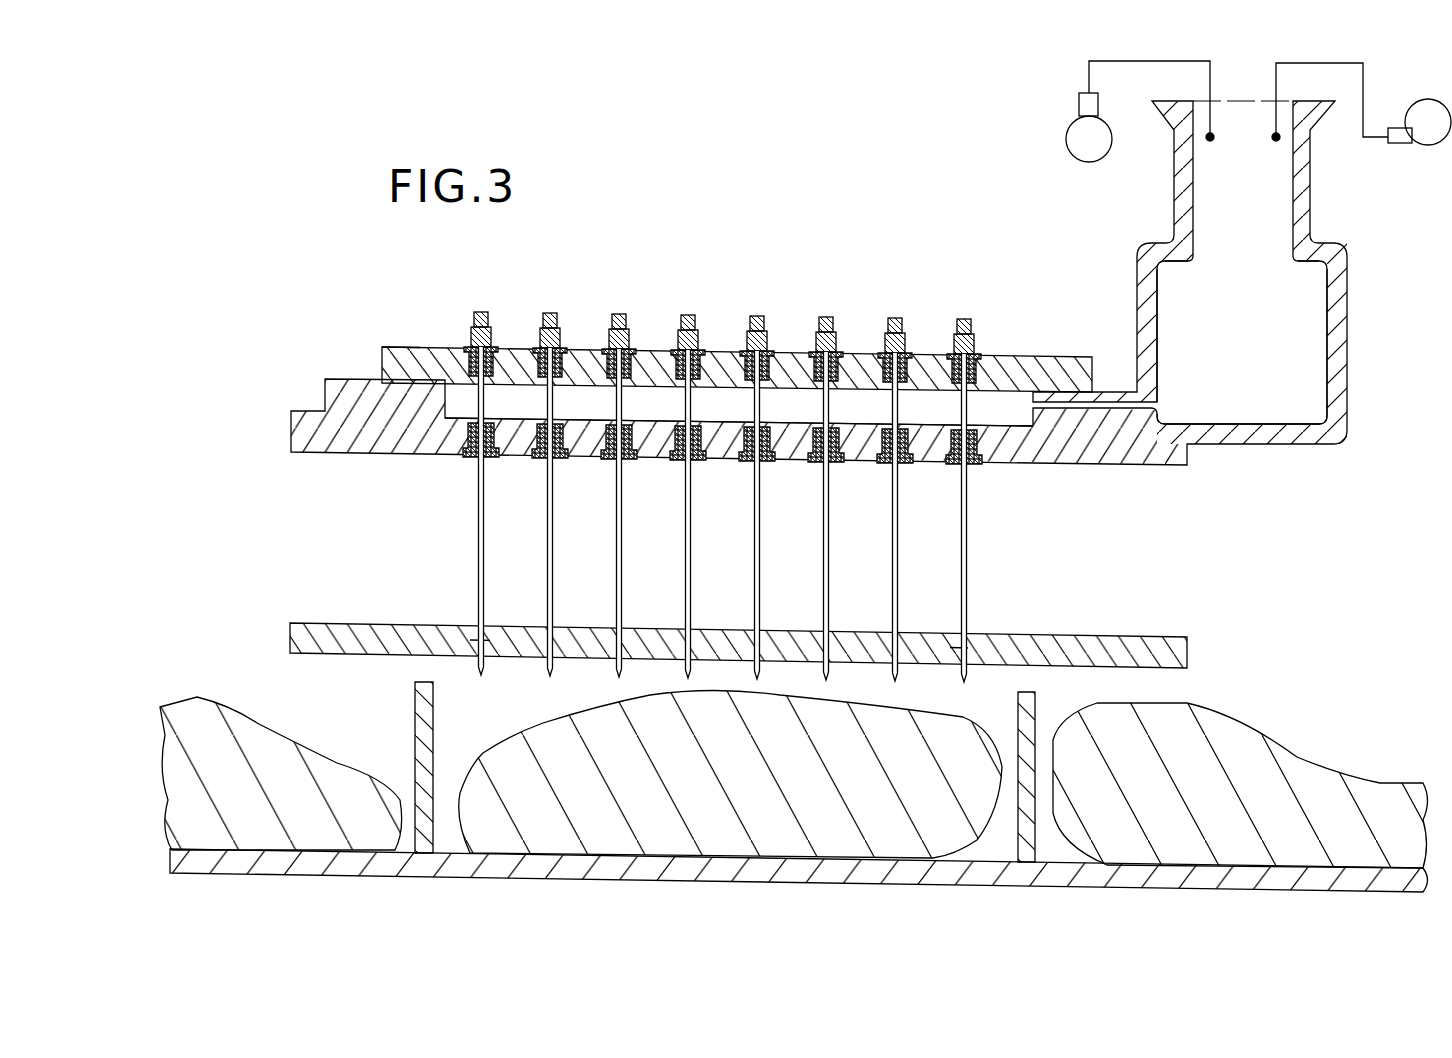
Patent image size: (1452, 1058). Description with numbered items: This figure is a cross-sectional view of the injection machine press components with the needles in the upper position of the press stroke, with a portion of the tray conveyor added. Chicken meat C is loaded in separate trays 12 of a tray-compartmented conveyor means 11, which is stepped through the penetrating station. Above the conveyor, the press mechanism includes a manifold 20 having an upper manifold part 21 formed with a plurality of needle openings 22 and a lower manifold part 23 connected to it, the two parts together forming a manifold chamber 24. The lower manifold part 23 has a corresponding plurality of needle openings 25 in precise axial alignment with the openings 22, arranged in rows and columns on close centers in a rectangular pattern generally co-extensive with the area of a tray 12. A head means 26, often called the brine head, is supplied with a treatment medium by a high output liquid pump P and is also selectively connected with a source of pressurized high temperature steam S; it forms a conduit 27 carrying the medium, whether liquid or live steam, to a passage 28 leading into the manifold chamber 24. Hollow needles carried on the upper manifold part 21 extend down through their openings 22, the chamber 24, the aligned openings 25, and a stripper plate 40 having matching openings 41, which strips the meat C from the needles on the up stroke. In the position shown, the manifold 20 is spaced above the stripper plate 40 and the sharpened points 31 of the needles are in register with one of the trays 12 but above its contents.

The conveyor means 11 is at (890, 870).
The tray 12 is at (423, 752).
The manifold 20 is at (345, 356).
The upper manifold part 21 is at (422, 357).
The needle openings 22 is at (493, 366).
The lower manifold part 23 is at (367, 430).
The manifold chamber 24 is at (858, 407).
The needle openings 25 is at (535, 432).
The head means 26 is at (1310, 201).
The conduit 27 is at (1205, 325).
The passage 28 is at (1092, 410).
The sharpened points 31 is at (549, 680).
The stripper plate 40 is at (1142, 652).
The openings 41 is at (470, 640).
The chicken meat C is at (237, 762).
The source of pressurized high temperature steam S is at (1140, 111).
The high output liquid pump P is at (1361, 104).